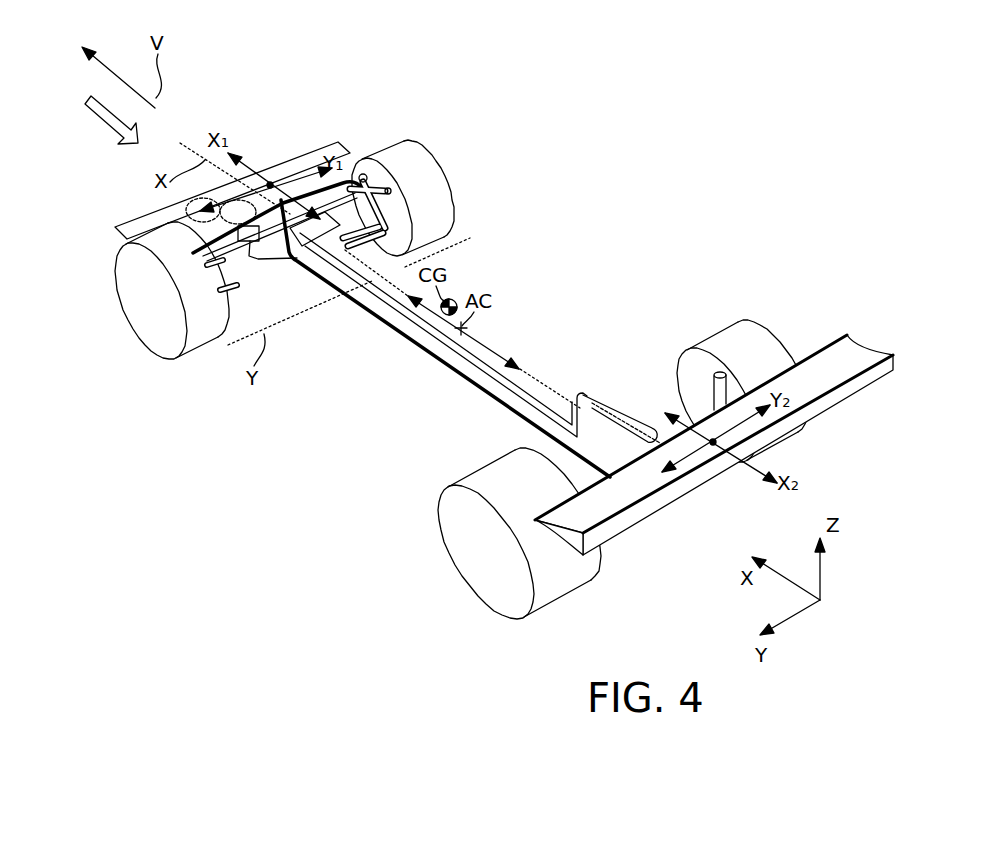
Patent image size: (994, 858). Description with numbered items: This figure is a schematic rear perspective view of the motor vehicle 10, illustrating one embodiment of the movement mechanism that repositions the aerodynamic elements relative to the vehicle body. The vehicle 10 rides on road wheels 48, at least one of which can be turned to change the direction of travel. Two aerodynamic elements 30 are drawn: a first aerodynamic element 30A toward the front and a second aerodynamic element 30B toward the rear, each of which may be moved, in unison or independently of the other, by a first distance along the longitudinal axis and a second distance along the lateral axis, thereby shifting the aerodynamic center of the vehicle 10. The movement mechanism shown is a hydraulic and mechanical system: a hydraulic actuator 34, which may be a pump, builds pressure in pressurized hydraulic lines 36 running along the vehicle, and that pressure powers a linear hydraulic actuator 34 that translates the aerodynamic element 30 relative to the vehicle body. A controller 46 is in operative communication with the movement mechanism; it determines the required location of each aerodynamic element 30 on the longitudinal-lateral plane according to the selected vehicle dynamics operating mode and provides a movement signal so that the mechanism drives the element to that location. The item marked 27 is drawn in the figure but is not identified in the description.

The motor vehicle 10 is at (557, 232).
The direction of travel arrow 27 is at (111, 144).
The aerodynamic element 30 is at (506, 333).
The first aerodynamic element 30A is at (355, 165).
The second aerodynamic element 30B is at (622, 527).
The hydraulic actuator 34 is at (598, 395).
The pressurized hydraulic lines 36 is at (405, 333).
The controller 46 is at (244, 246).
The road wheels 48 is at (447, 210).